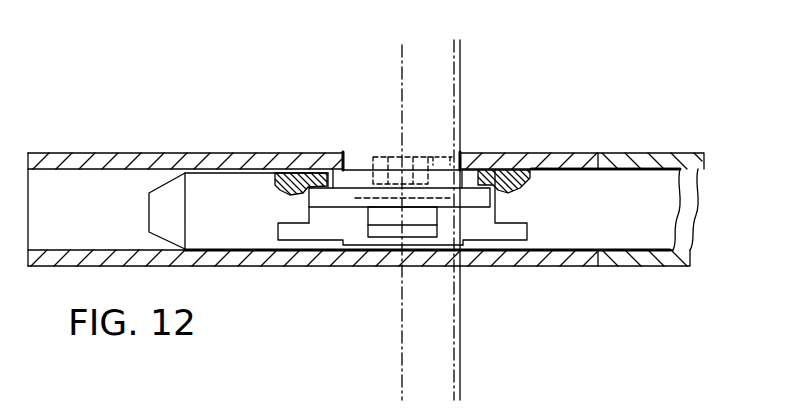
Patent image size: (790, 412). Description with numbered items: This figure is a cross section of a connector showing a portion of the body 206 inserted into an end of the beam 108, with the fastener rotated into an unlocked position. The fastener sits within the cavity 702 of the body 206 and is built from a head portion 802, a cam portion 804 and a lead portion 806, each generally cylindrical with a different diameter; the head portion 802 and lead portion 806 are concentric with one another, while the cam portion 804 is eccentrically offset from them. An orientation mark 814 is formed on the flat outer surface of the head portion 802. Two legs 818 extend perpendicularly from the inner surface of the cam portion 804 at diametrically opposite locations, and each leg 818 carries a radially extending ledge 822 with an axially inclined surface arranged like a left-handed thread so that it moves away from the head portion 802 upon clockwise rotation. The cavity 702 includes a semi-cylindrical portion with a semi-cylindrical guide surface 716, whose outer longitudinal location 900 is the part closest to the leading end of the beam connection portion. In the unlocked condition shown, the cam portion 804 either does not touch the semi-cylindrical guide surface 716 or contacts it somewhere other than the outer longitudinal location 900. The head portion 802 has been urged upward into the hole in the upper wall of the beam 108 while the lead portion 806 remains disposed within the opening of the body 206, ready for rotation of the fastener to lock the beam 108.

The beam 108 is at (92, 154).
The outer longitudinal location 900 is at (309, 202).
The cam portion 804 is at (333, 195).
The head portion 802 is at (458, 157).
The orientation mark 814 is at (443, 160).
The lead portion 806 is at (473, 172).
The semi-cylindrical guide surface 716 is at (495, 213).
The body 206 is at (618, 198).
The cavity 702 is at (308, 232).
The legs 818 is at (423, 217).
The ledge 822 is at (390, 232).